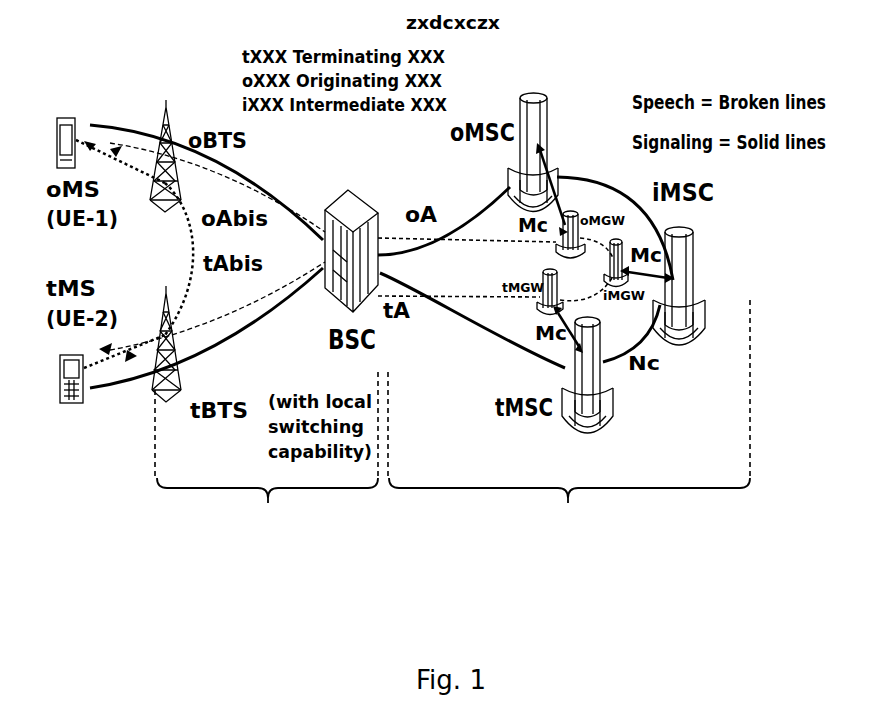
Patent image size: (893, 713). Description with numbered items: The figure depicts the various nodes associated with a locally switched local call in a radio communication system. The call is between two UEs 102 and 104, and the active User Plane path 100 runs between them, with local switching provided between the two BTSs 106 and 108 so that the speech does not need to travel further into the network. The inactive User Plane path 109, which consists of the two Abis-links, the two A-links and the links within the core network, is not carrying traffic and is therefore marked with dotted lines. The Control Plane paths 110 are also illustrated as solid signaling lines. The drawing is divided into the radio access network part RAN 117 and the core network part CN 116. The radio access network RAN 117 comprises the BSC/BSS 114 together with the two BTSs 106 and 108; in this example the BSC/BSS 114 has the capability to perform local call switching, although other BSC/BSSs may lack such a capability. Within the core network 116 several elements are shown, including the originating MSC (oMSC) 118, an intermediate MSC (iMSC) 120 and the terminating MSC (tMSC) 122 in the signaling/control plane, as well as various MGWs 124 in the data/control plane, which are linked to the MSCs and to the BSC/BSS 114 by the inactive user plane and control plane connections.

The active User Plane path 100 is at (187, 283).
The UE 102 is at (68, 117).
The UE 104 is at (67, 405).
The BTS 106 is at (166, 107).
The BTS 108 is at (177, 392).
The inactive User Plane path 109 is at (455, 298).
The Control Plane paths 110 is at (410, 285).
The BSC/BSS 114 is at (345, 208).
The core network CN 116 is at (625, 566).
The radio access network RAN 117 is at (330, 566).
The originating MSC (oMSC) 118 is at (532, 92).
The intermediate MSC (iMSC) 120 is at (706, 306).
The terminating MSC (tMSC) 122 is at (607, 407).
The MGWs 124 is at (620, 270).